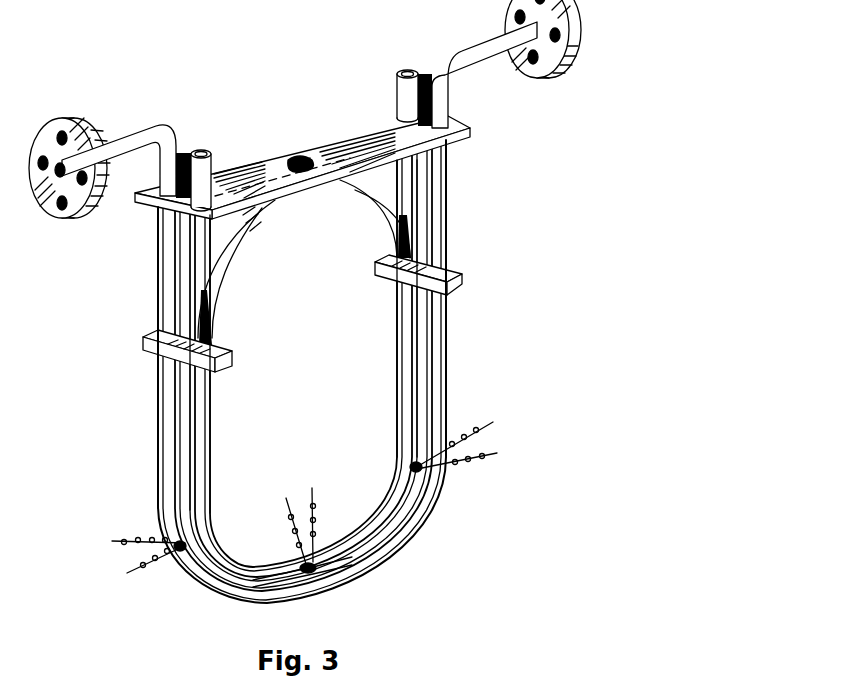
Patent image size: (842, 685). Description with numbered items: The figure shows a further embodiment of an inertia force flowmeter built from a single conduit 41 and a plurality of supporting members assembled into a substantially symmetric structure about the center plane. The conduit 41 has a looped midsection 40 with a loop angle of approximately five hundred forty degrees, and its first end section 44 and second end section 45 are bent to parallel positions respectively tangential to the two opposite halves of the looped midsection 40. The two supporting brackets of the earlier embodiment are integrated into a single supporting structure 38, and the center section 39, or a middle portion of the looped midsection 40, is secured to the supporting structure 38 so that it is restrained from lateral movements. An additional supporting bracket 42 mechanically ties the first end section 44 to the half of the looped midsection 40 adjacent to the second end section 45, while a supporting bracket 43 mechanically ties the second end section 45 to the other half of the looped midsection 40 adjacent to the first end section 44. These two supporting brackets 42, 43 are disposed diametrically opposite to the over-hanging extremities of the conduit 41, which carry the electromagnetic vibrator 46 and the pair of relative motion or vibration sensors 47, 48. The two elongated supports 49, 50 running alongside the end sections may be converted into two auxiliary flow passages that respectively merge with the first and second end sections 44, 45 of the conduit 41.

The supporting structure 38 is at (383, 120).
The center section 39 is at (267, 160).
The looped midsection 40 is at (228, 237).
The conduit 41 is at (240, 594).
The supporting bracket 42 is at (152, 357).
The supporting bracket 43 is at (457, 287).
The first end section 44 is at (168, 307).
The second end section 45 is at (440, 232).
The electromagnetic vibrator 46 is at (352, 576).
The relative motion or vibration sensor 47 is at (173, 503).
The relative motion or vibration sensor 48 is at (430, 488).
The elongated support 49 is at (192, 258).
The elongated support 50 is at (410, 173).